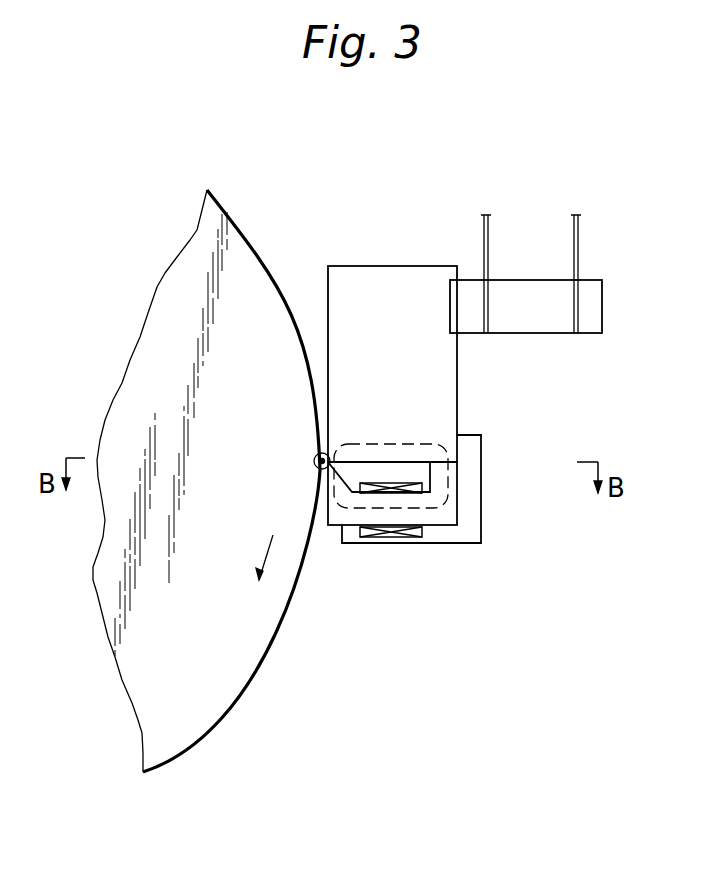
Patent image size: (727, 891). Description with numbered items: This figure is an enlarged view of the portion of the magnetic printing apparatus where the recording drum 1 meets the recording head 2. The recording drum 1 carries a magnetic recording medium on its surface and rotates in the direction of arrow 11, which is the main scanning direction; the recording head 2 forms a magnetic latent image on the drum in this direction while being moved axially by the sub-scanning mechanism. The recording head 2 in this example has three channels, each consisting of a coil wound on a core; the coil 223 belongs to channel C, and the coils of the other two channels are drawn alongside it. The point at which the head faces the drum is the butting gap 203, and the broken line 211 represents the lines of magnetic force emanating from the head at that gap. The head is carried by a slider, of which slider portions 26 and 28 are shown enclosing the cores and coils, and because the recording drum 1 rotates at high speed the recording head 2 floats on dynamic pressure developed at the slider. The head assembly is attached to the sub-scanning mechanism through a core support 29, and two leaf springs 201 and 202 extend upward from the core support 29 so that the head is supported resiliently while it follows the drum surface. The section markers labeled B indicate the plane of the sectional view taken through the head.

The recording drum 1 is at (268, 640).
The arrow (direction of rotation) 11 is at (265, 566).
The recording head 2 is at (520, 502).
The leaf spring 201 is at (488, 250).
The leaf spring 202 is at (579, 252).
The butting gap 203 is at (314, 468).
The lines of magnetic force 211 is at (350, 440).
The coil 223 is at (406, 543).
The slider 26 is at (345, 528).
The slider 28 is at (453, 367).
The core support 29 is at (551, 326).